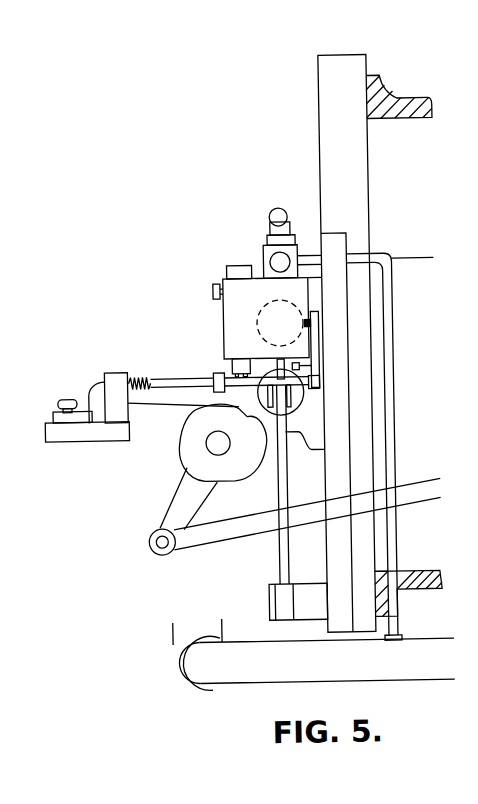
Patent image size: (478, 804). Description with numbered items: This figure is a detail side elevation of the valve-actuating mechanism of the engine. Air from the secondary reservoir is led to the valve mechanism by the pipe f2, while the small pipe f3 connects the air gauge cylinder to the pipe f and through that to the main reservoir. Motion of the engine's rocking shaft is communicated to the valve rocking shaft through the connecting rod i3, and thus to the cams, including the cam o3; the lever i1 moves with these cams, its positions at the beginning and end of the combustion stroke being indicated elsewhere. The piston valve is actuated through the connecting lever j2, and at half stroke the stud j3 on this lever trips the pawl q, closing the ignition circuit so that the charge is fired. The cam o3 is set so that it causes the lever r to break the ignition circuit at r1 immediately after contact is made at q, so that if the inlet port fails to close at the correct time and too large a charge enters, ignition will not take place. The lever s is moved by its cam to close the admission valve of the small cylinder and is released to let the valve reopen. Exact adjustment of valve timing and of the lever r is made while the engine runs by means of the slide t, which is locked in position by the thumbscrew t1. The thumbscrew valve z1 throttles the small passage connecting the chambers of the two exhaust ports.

The pipe f is at (314, 653).
The pipe f2 is at (271, 211).
The small pipe f3 is at (389, 291).
The thumbscrew valve z1 is at (214, 288).
The ignition circuit break point r1 is at (313, 328).
The pawl q is at (301, 359).
The stud j3 is at (304, 373).
The connecting lever j2 is at (286, 472).
The lever s is at (181, 393).
The lever r is at (212, 374).
The slide t is at (52, 412).
The thumbscrew t1 is at (60, 395).
The cam o3 is at (223, 443).
The lever i1 is at (183, 511).
The connecting rod i3 is at (247, 536).